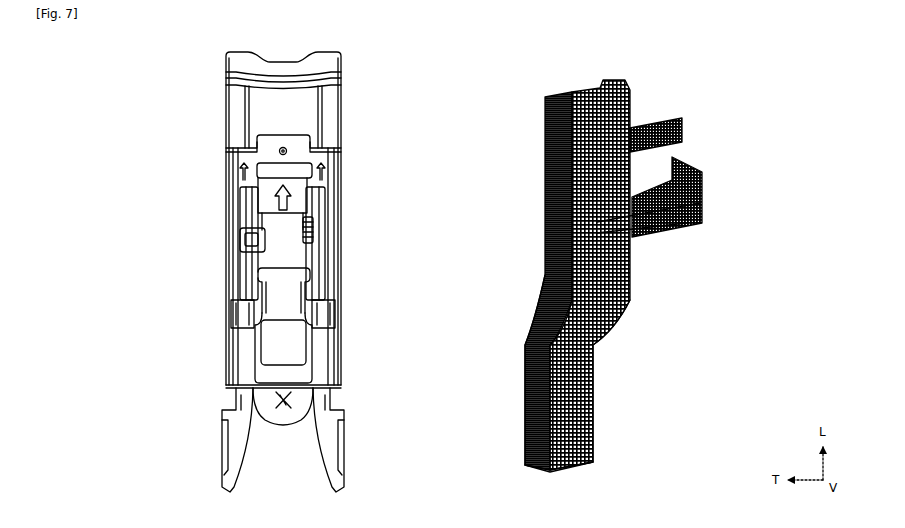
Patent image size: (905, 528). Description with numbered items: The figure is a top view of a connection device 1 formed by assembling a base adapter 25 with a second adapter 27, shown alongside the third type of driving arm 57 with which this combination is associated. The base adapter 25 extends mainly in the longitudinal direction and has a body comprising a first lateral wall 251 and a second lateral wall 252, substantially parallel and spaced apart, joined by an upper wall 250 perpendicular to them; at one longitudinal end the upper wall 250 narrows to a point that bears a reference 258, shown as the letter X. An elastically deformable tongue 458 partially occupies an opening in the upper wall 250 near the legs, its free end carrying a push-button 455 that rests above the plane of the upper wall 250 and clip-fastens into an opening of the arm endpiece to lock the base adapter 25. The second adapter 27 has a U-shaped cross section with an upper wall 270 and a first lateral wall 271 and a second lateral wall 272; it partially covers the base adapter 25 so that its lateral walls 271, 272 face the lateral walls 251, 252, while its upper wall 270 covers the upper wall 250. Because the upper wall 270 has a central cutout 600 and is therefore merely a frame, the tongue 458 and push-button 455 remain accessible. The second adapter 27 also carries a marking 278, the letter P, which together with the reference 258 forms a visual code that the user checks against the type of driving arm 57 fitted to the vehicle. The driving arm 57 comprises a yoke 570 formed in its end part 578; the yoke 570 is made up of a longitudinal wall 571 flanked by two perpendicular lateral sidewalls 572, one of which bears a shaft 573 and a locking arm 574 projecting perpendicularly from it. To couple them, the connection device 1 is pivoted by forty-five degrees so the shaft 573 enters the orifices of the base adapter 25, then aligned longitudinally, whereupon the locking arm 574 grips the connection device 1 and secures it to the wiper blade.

The connection device 1 is at (122, 117).
The base adapter 25 is at (243, 410).
The second adapter 27 is at (233, 242).
The upper wall 250 is at (345, 270).
The first lateral wall 251 is at (340, 240).
The second lateral wall 252 is at (232, 218).
The reference 258 is at (252, 380).
The upper wall 270 is at (232, 155).
The first lateral wall 271 is at (340, 158).
The second lateral wall 272 is at (232, 172).
The marking 278 is at (232, 258).
The push-button 455 is at (340, 352).
The tongue 458 is at (343, 302).
The cutout 600 is at (233, 283).
The third type of driving arm 57 is at (735, 117).
The yoke 570 is at (612, 300).
The longitudinal wall 571 is at (615, 275).
The lateral sidewall 572 is at (610, 85).
The shaft 573 is at (682, 128).
The locking arm 574 is at (682, 224).
The end part 578 is at (583, 310).